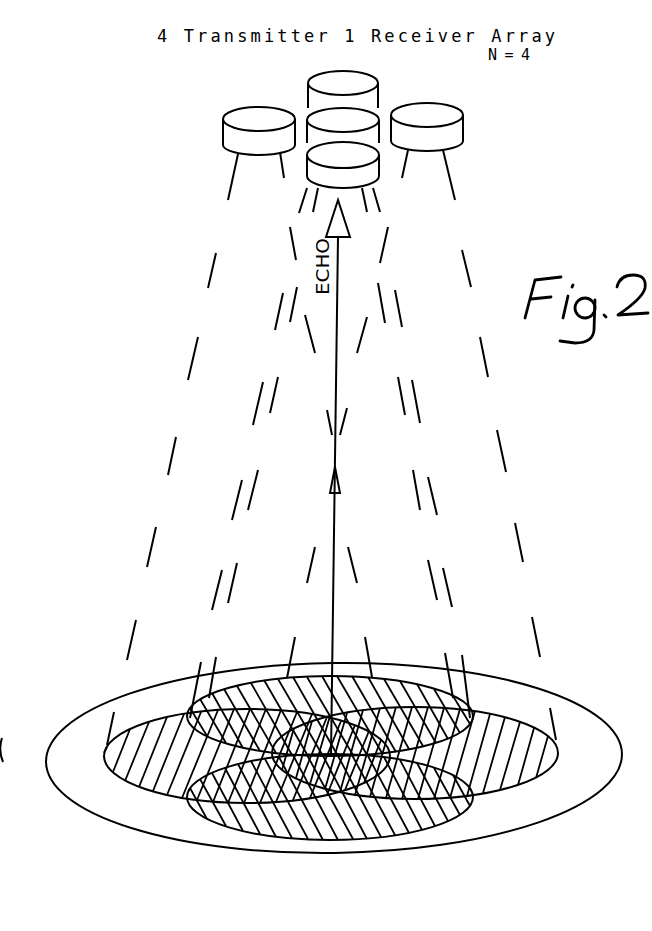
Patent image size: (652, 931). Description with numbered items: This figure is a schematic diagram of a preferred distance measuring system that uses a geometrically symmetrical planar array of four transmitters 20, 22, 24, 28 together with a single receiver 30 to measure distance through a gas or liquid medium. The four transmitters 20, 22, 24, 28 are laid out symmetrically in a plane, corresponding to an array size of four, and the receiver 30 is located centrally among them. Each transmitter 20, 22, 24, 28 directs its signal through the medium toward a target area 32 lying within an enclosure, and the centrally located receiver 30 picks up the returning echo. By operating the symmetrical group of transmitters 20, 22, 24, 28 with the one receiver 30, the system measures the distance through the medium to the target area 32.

The transmitter 20 is at (232, 143).
The transmitter 22 is at (315, 85).
The transmitter 24 is at (453, 115).
The transmitter 28 is at (404, 193).
The receiver 30 is at (313, 137).
The target area 32 is at (250, 802).